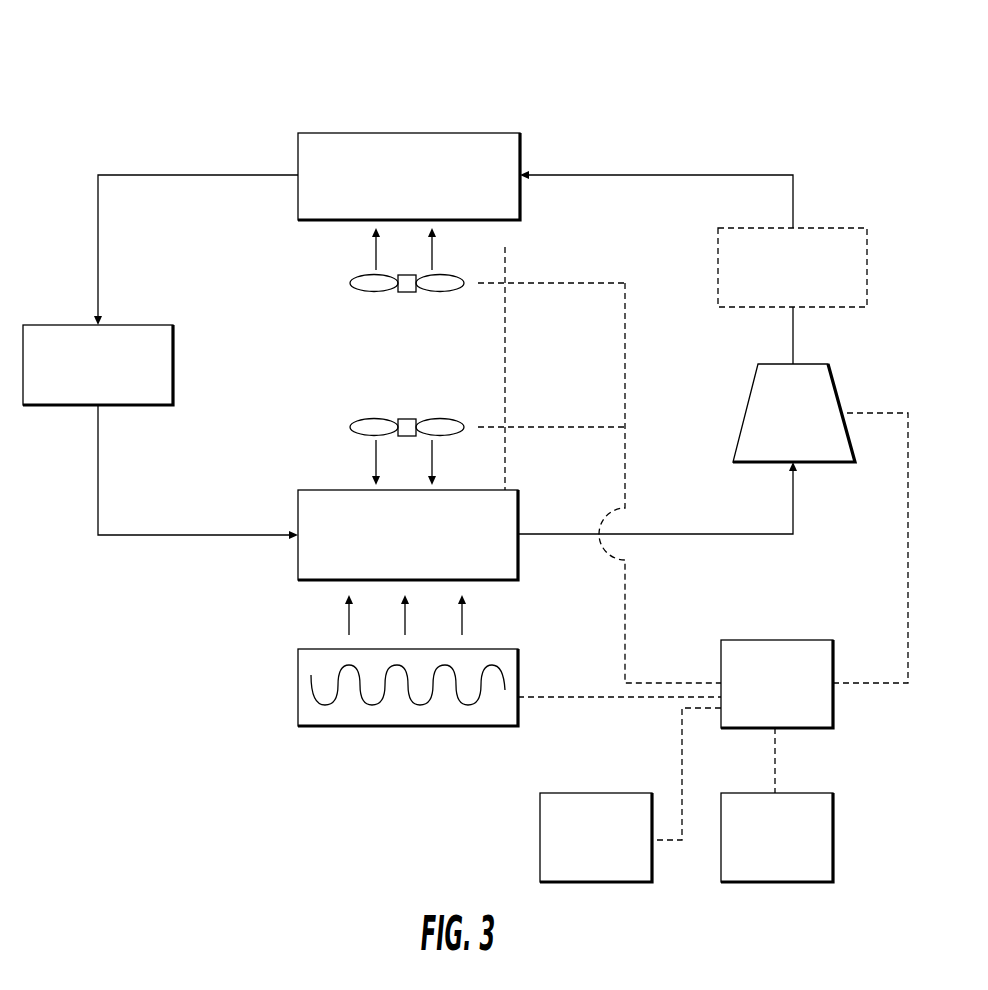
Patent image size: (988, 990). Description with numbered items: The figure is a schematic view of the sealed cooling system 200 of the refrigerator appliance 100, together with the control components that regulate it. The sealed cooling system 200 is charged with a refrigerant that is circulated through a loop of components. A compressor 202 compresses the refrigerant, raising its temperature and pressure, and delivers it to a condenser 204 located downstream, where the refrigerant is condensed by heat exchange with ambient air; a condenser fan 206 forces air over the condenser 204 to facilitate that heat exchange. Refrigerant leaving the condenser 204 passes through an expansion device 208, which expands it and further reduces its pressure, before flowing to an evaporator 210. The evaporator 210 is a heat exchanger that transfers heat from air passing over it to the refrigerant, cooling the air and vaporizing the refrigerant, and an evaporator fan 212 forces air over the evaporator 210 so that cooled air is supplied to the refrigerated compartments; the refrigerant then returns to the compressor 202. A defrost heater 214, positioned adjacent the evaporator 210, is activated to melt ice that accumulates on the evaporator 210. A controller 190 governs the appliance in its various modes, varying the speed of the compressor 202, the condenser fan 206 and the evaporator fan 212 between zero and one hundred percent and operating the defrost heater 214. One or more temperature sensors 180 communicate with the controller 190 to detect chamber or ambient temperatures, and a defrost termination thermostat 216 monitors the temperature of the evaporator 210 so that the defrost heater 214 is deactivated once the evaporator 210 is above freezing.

The sealed cooling system 200 is at (139, 41).
The condenser 204 is at (409, 176).
The condenser fan 206 is at (377, 261).
The expansion device 208 is at (98, 365).
The evaporator 210 is at (408, 535).
The evaporator fan 212 is at (377, 433).
The defrost heater 214 is at (367, 660).
The refrigerator appliance 100 is at (792, 267).
The compressor 202 is at (794, 413).
The controller 190 is at (777, 684).
The temperature sensor 180 is at (596, 837).
The defrost termination thermostat 216 is at (777, 837).